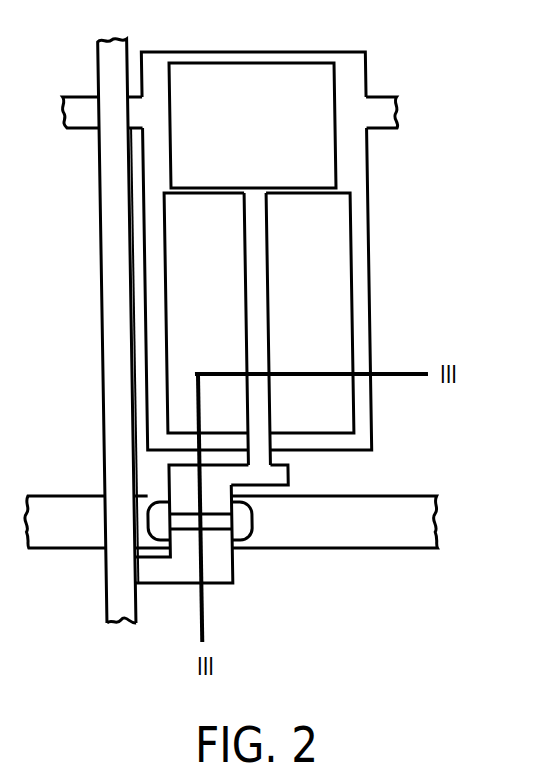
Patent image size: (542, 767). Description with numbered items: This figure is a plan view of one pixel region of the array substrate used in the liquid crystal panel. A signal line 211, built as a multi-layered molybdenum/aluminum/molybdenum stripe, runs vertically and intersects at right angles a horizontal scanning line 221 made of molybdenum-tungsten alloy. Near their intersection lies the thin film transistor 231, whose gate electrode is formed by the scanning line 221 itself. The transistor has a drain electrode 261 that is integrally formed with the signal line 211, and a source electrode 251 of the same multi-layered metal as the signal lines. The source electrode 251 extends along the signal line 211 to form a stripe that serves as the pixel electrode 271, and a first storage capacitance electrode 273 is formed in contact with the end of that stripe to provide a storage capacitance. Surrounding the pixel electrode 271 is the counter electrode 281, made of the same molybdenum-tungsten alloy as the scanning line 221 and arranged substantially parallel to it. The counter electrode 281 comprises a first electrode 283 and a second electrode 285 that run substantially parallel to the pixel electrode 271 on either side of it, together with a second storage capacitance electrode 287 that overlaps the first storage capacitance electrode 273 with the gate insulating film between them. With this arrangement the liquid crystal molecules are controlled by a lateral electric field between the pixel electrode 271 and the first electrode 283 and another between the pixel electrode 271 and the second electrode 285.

The signal line 211 is at (120, 628).
The scanning line 221 is at (437, 527).
The thin film transistor 231 is at (250, 540).
The source electrode 251 is at (290, 475).
The drain electrode 261 is at (220, 573).
The pixel electrode 271 is at (260, 298).
The first storage capacitance electrode 273 is at (273, 73).
The counter electrode 281 is at (450, 192).
The first electrode 283 is at (153, 270).
The second electrode 285 is at (368, 252).
The second storage capacitance electrode 287 is at (366, 68).